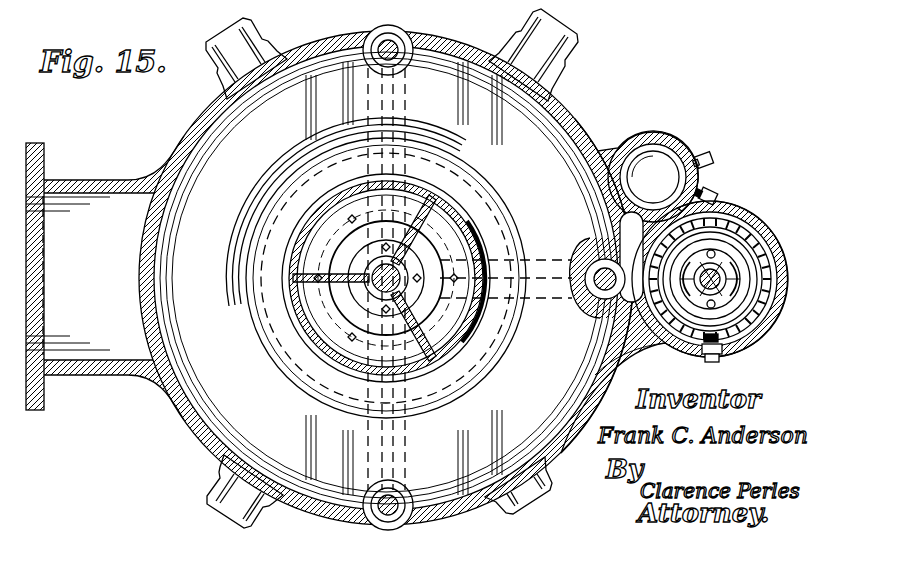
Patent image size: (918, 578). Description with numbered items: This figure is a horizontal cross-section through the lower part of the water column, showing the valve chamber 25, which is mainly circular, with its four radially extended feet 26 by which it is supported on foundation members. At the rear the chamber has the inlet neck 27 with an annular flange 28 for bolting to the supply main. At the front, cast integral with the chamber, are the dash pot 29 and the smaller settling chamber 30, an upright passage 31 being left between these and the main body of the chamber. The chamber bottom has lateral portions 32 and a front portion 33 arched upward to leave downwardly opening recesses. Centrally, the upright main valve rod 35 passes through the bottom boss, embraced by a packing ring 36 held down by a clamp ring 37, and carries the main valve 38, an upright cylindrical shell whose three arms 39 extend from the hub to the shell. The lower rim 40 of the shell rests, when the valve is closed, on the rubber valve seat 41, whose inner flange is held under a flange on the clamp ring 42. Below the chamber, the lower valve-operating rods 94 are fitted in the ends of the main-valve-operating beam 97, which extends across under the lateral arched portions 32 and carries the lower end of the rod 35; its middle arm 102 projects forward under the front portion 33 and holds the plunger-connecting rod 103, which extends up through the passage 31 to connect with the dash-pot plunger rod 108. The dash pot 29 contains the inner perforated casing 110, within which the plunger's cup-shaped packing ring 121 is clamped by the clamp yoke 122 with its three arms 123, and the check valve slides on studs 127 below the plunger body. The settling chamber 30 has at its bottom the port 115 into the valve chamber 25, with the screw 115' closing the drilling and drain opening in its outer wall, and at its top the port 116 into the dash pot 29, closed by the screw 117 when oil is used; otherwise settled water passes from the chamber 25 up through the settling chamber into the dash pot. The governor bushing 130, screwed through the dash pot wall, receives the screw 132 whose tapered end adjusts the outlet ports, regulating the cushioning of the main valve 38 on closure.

The valve chamber 25 is at (197, 126).
The radially extended feet 26 is at (252, 36).
The inlet neck 27 is at (104, 180).
The annular flange 28 is at (46, 148).
The dash pot 29 is at (736, 216).
The settling chamber 30 is at (660, 136).
The upright passage 31 is at (618, 246).
The lateral portions 32 is at (410, 94).
The front portion 33 is at (516, 312).
The main valve rod 35 is at (370, 268).
The packing ring 36 is at (362, 288).
The clamp ring 37 is at (362, 302).
The main valve 38 is at (292, 262).
The arms 39 is at (428, 244).
The lower rim 40 is at (293, 296).
The valve seat 41 is at (318, 232).
The clamp ring 42 is at (345, 352).
The lower valve-operating rods 94 is at (393, 42).
The main-valve-operating beam 97 is at (380, 32).
The middle arm 102 is at (505, 245).
The plunger-connecting rod 103 is at (592, 266).
The dash-pot plunger rod 108 is at (660, 340).
The inner perforated casing 110 is at (690, 340).
The port 115 is at (650, 177).
The screw 115' is at (724, 156).
The port 116 is at (718, 202).
The screw 117 is at (712, 190).
The packing ring 121 is at (752, 236).
The clamp yoke 122 is at (742, 334).
The arms 123 is at (712, 256).
The studs 127 is at (708, 255).
The bushing 130 is at (722, 352).
The screw 132 is at (706, 362).